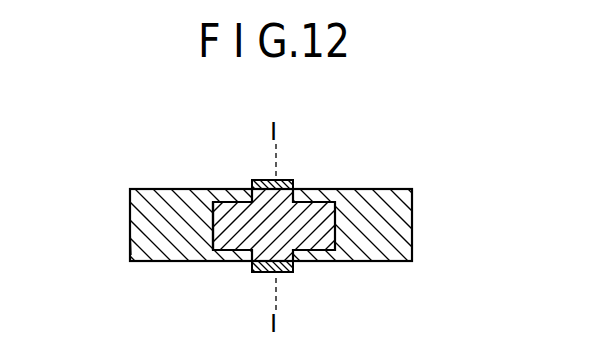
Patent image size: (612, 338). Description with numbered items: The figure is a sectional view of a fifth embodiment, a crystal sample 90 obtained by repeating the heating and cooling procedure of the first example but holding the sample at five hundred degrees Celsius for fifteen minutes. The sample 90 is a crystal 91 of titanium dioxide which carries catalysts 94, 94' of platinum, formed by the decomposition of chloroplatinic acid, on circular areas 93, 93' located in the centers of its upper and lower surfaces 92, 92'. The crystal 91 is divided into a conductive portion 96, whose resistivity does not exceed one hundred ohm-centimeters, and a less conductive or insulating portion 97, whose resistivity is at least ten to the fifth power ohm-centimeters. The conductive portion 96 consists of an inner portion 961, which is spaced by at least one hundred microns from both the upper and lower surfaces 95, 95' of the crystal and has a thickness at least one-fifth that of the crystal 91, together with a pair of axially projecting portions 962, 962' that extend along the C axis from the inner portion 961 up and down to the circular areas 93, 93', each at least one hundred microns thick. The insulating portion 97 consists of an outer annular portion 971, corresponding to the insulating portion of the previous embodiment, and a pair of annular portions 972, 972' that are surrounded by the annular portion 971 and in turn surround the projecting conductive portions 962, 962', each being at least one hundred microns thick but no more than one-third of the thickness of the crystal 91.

The crystal sample 90 is at (130, 257).
The crystal 91 is at (413, 193).
The upper surface 92 is at (356, 166).
The lower surface 92' is at (356, 283).
The circular area 93 is at (330, 178).
The circular area 93' is at (329, 273).
The catalyst 94 is at (289, 162).
The catalyst 94' is at (290, 295).
The upper surface of the crystal 95 is at (251, 169).
The lower surface of the crystal 95' is at (247, 282).
The conductive portion 96 is at (322, 213).
The insulating portion 97 is at (378, 247).
The inner portion 961 is at (212, 223).
The axially projecting portion 962 is at (211, 174).
The axially projecting portion 962' is at (200, 289).
The annular portion 971 is at (153, 242).
The annular portion 972 is at (160, 200).
The annular portion 972' is at (177, 275).